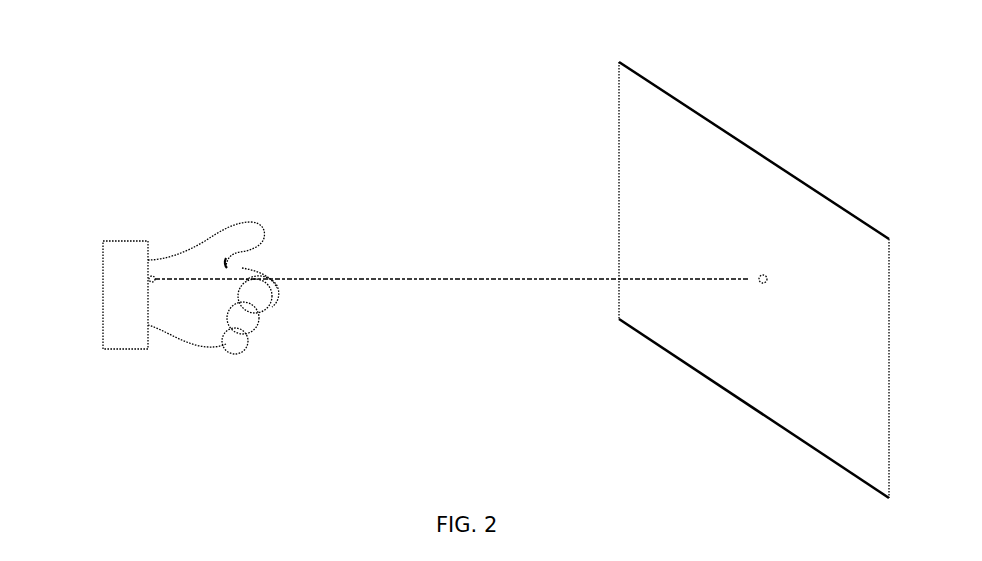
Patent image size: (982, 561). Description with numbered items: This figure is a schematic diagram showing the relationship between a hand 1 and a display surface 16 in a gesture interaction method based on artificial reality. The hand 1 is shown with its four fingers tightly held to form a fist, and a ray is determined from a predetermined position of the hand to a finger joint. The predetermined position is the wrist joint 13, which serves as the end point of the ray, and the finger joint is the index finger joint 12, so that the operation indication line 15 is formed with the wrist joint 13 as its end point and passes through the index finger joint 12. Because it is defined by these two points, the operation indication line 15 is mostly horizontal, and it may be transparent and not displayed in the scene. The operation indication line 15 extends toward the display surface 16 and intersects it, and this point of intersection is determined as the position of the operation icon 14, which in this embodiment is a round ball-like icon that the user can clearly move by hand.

The hand of user 1 is at (220, 223).
The index finger joint 12 is at (273, 305).
The wrist joint 13 is at (150, 280).
The operation icon 14 is at (757, 283).
The operation indication line 15 is at (437, 272).
The display surface 16 is at (615, 145).